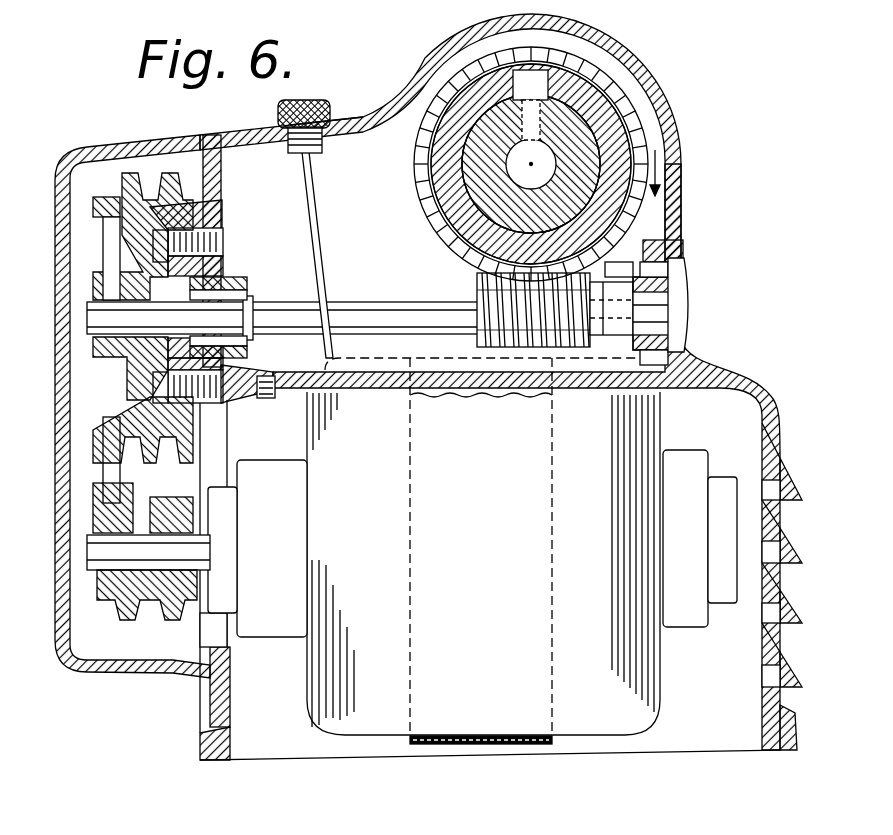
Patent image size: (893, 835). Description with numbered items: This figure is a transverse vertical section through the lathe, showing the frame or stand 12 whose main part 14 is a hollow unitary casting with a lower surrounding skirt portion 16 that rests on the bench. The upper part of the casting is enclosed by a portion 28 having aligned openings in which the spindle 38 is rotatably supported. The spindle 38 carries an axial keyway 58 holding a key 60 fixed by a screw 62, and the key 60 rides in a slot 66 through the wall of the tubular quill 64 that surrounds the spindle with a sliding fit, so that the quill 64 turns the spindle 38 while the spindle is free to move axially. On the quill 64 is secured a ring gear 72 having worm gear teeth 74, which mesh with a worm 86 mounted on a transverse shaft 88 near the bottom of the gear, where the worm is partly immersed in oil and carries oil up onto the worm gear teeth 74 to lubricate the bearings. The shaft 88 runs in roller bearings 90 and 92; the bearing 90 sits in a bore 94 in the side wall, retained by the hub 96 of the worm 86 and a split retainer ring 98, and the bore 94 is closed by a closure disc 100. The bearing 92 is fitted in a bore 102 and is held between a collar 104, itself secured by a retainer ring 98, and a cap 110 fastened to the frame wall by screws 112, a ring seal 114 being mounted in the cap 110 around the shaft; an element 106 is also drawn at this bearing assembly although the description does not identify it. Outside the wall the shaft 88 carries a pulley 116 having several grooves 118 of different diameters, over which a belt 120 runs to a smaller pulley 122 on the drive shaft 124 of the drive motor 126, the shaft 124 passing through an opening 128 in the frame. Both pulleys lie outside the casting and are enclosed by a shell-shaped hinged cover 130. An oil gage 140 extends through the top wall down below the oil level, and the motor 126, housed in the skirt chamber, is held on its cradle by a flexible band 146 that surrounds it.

The frame or stand 12 is at (765, 362).
The main part 14 is at (733, 350).
The skirt portion 16 is at (780, 435).
The enclosing portion 28 is at (433, 53).
The spindle 38 is at (607, 110).
The axial keyway 58 is at (411, 90).
The key 60 is at (553, 53).
The screw 62 is at (467, 50).
The quill 64 is at (627, 117).
The slot 66 is at (597, 63).
The ring gear 72 is at (432, 160).
The worm gear teeth 74 is at (425, 195).
The worm 86 is at (461, 332).
The transverse shaft 88 is at (372, 300).
The bearing 90 is at (641, 269).
The bearing 92 is at (234, 272).
The bore 94 is at (637, 250).
The hub 96 is at (598, 295).
The split retainer ring 98 is at (684, 250).
The closure disc 100 is at (687, 295).
The bore 102 is at (228, 262).
The collar 104 is at (248, 280).
The shaft collar 106 is at (253, 300).
The cap 110 is at (150, 280).
The screws 112 is at (222, 218).
The ring seal 114 is at (135, 362).
The pulley 116 is at (97, 413).
The grooves 118 is at (172, 180).
The belt 120 is at (114, 473).
The pulley 122 is at (92, 592).
The drive shaft 124 is at (175, 600).
The drive motor 126 is at (320, 675).
The opening 128 is at (210, 633).
The cover 130 is at (88, 148).
The oil gage 140 is at (320, 233).
The flexible band 146 is at (497, 745).